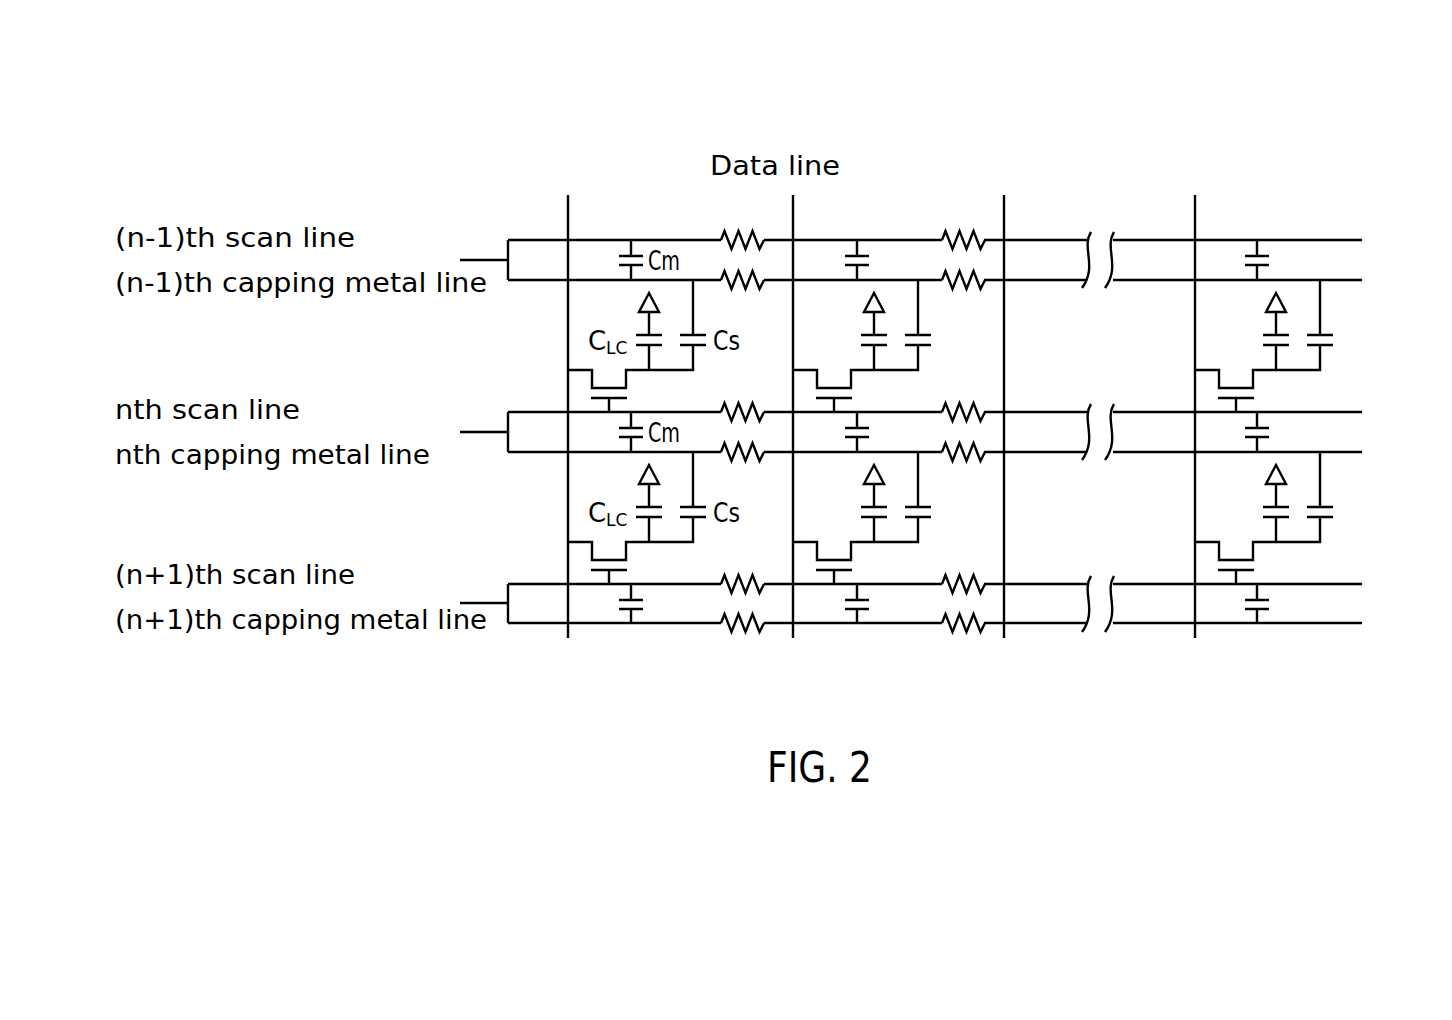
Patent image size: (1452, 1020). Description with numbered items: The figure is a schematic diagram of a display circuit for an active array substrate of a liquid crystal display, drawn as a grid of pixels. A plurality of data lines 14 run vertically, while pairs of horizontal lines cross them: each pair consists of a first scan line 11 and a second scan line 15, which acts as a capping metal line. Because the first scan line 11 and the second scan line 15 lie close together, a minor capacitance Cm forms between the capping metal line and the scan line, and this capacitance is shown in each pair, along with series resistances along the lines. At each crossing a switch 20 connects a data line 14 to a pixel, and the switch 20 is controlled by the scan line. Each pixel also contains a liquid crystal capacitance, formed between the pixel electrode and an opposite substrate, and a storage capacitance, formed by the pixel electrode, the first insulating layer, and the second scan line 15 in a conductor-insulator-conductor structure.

The data line 14 is at (568, 192).
The second scan line 15 is at (969, 415).
The first scan line 11 is at (969, 454).
The switch 20 is at (600, 378).